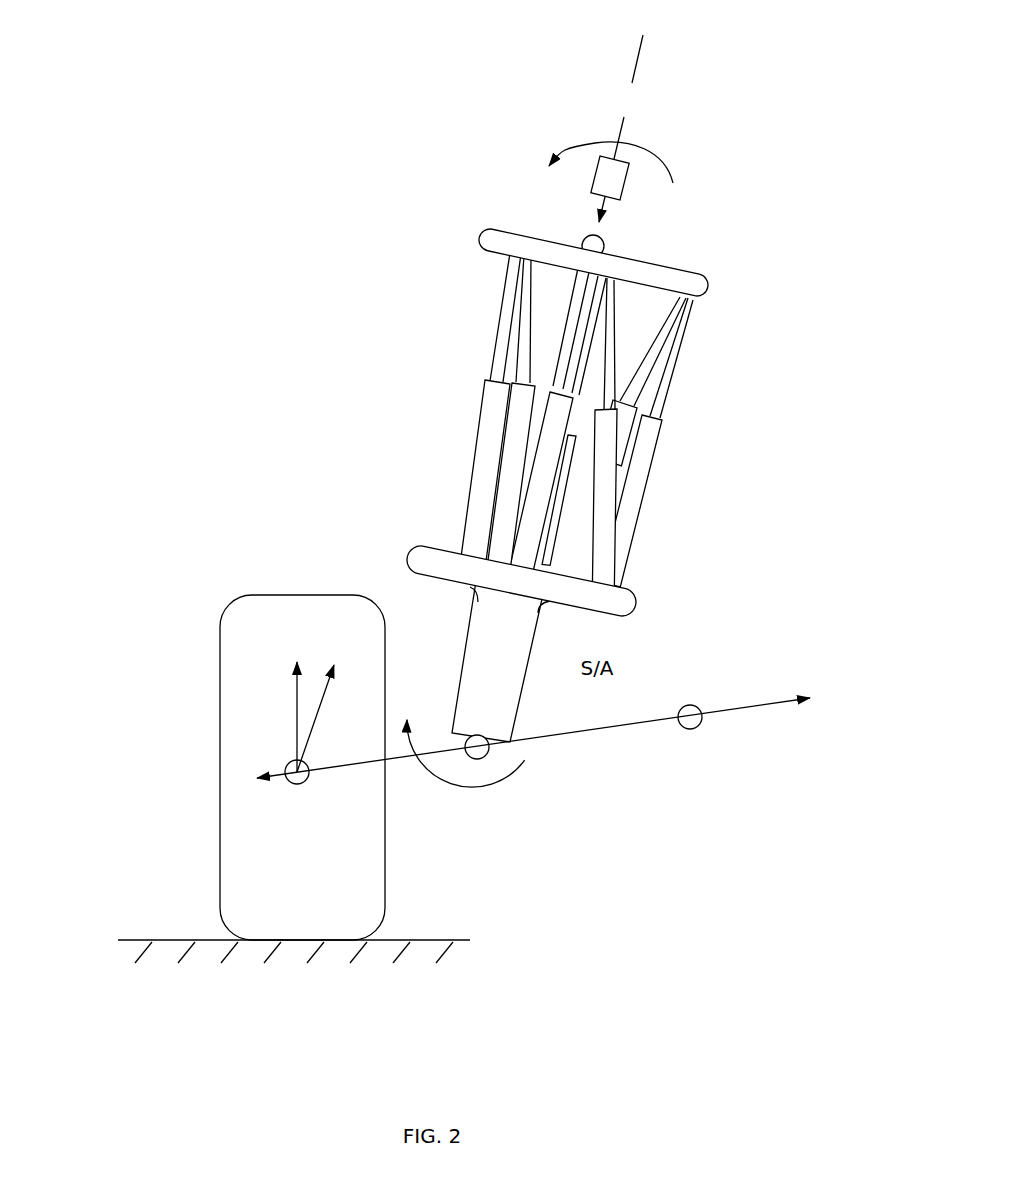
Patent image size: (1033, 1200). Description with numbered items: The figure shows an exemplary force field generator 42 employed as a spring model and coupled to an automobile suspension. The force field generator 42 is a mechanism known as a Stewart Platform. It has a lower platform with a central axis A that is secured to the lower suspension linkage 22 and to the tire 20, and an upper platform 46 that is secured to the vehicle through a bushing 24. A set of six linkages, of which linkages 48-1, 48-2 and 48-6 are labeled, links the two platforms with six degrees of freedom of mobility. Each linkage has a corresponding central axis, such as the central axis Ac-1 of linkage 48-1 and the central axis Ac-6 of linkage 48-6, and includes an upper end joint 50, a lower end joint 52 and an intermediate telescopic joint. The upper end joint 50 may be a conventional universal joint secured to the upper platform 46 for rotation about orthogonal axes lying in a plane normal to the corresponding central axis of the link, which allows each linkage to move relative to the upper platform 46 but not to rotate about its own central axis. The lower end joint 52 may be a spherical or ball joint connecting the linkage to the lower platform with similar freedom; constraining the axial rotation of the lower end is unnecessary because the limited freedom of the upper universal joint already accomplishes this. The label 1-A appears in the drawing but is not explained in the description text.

The tire 20 is at (243, 867).
The lower suspension linkage 22 is at (585, 735).
The bushing 24 is at (627, 193).
The force field generator 42 is at (633, 626).
The upper platform 46 is at (587, 493).
The linkage 48-1 is at (655, 457).
The linkage 48-2 is at (602, 542).
The linkage 48-6 is at (492, 420).
The upper end joint 50 is at (697, 297).
The lower end joint 52 is at (622, 583).
The central axis A is at (640, 60).
The central axis Ac-1 is at (688, 435).
The central axis Ac-6 is at (429, 410).
The pivot rotation 1-A is at (466, 776).